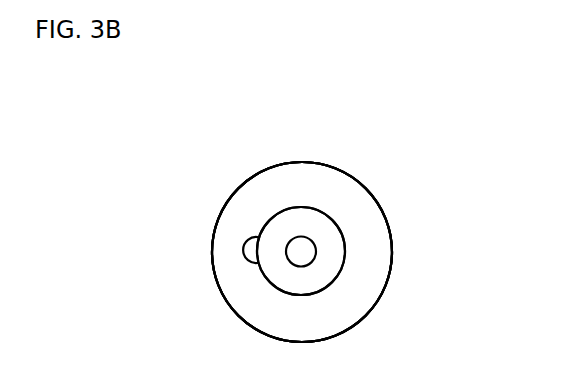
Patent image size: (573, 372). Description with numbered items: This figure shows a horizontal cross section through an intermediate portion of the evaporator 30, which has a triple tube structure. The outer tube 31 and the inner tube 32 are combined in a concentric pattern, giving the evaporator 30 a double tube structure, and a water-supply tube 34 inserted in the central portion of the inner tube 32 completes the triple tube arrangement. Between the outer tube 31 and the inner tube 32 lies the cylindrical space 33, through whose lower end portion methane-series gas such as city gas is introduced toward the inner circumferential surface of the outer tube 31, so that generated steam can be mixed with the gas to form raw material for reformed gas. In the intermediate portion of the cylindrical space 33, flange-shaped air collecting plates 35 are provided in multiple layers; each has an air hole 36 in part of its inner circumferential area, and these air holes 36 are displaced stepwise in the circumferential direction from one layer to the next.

The evaporator 30 is at (189, 235).
The outer tube 31 is at (348, 173).
The inner tube 32 is at (342, 268).
The cylindrical space 33 is at (260, 307).
The water-supply tube 34 is at (302, 237).
The air collecting plate 35 is at (378, 250).
The air hole 36 is at (255, 250).